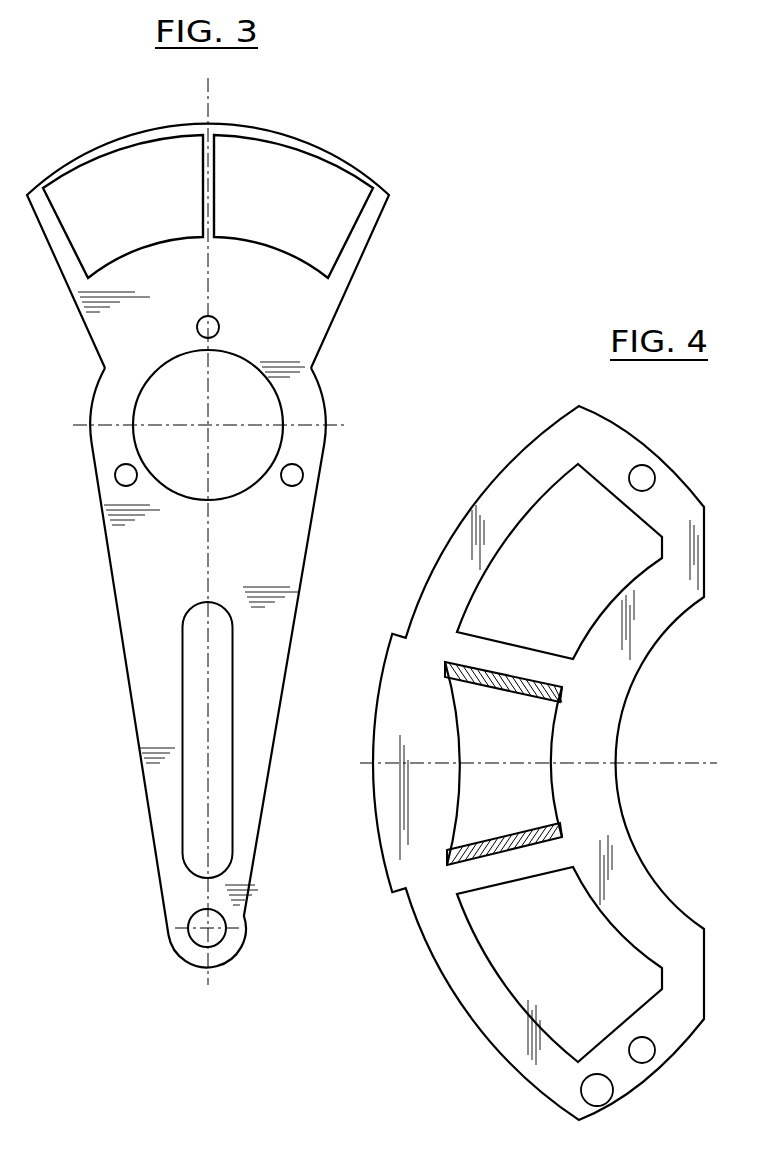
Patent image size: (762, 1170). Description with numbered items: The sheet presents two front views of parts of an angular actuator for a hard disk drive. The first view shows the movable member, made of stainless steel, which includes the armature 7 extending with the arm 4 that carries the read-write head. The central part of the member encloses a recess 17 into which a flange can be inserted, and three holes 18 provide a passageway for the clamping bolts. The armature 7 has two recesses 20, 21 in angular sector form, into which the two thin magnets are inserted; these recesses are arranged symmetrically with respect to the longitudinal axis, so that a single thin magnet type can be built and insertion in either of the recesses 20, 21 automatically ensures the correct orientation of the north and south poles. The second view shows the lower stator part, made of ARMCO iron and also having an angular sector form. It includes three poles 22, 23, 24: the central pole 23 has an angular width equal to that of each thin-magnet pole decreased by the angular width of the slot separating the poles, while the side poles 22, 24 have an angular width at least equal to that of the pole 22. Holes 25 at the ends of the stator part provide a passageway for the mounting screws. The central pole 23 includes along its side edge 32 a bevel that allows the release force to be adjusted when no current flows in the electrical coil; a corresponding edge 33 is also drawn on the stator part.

In FIG. 3, the arm 4 is at (270, 627).
In FIG. 3, the armature 7 is at (318, 303).
In FIG. 3, the recess 17 is at (255, 415).
In FIG. 3, the holes 18 is at (200, 325).
In FIG. 3, the recess 20 is at (117, 176).
In FIG. 3, the recess 21 is at (304, 178).
In FIG. 4, the pole 22 is at (581, 970).
In FIG. 4, the central pole 23 is at (513, 753).
In FIG. 4, the pole 24 is at (555, 610).
In FIG. 4, the holes 25 is at (645, 477).
In FIG. 4, the side edge 32 is at (538, 825).
In FIG. 4, the bridge strip 33 is at (542, 680).